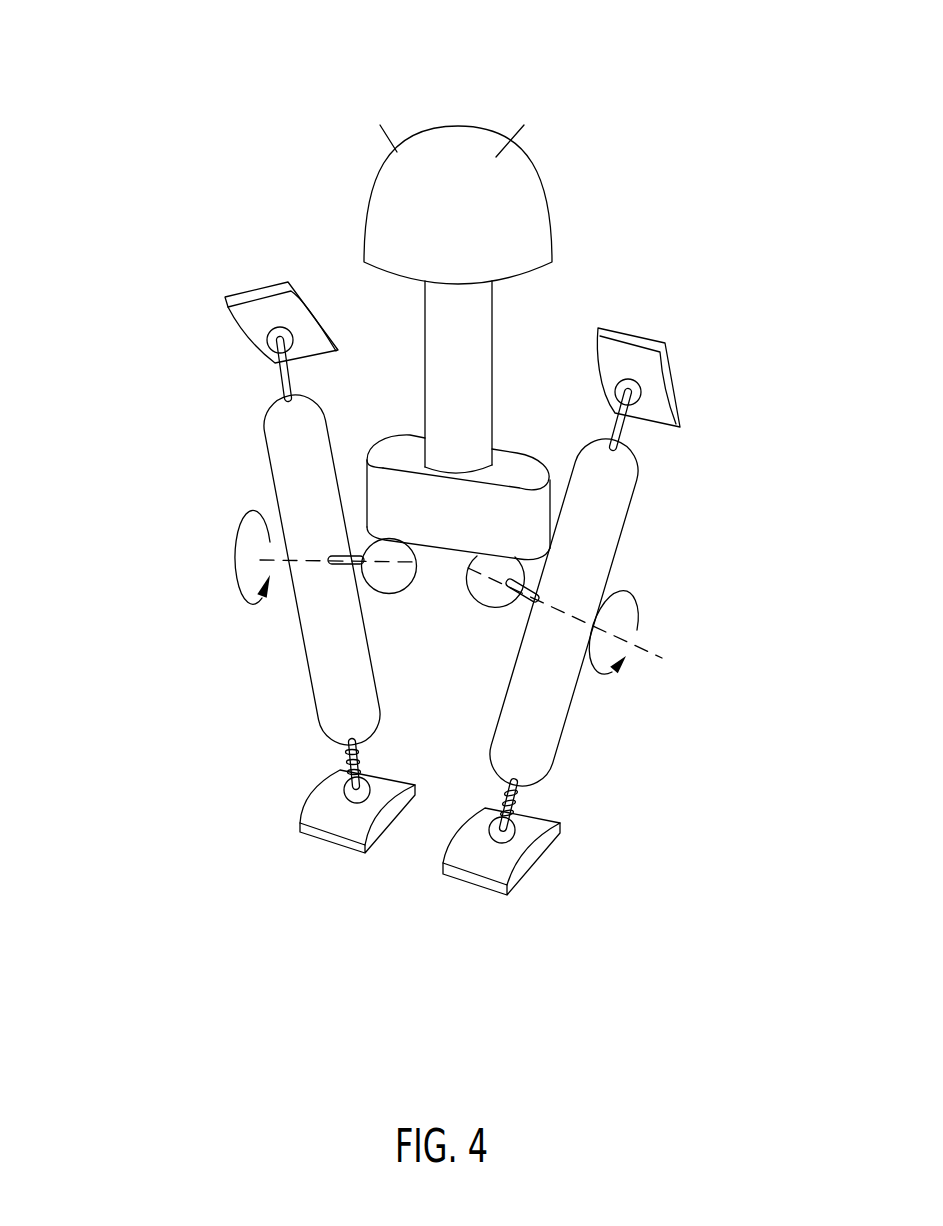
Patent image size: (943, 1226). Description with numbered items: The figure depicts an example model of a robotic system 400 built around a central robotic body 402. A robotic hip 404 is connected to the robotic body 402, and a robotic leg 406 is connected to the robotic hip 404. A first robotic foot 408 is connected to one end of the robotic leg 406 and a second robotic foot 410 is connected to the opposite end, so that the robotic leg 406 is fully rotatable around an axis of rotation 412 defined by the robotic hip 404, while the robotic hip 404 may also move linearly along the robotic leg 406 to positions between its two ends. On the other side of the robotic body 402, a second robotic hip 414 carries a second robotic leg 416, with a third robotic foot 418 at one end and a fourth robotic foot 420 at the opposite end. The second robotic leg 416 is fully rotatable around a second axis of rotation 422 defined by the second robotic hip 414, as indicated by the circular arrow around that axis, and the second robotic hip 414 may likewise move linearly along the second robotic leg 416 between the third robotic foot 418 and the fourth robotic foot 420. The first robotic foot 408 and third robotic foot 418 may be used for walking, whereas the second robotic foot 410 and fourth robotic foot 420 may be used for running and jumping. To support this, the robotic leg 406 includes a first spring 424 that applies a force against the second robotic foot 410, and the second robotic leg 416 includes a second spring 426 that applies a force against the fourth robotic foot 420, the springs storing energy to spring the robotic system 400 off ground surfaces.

The robotic system 400 is at (95, 42).
The robotic body 402 is at (307, 160).
The robotic hip 404 is at (393, 602).
The robotic leg 406 is at (125, 432).
The first robotic foot 408 is at (185, 278).
The second robotic foot 410 is at (268, 857).
The axis of rotation 412 is at (178, 557).
The second robotic hip 414 is at (490, 615).
The second robotic leg 416 is at (757, 512).
The third robotic foot 418 is at (707, 347).
The fourth robotic foot 420 is at (560, 882).
The second axis of rotation 422 is at (677, 663).
The first spring 424 is at (310, 770).
The second spring 426 is at (563, 807).